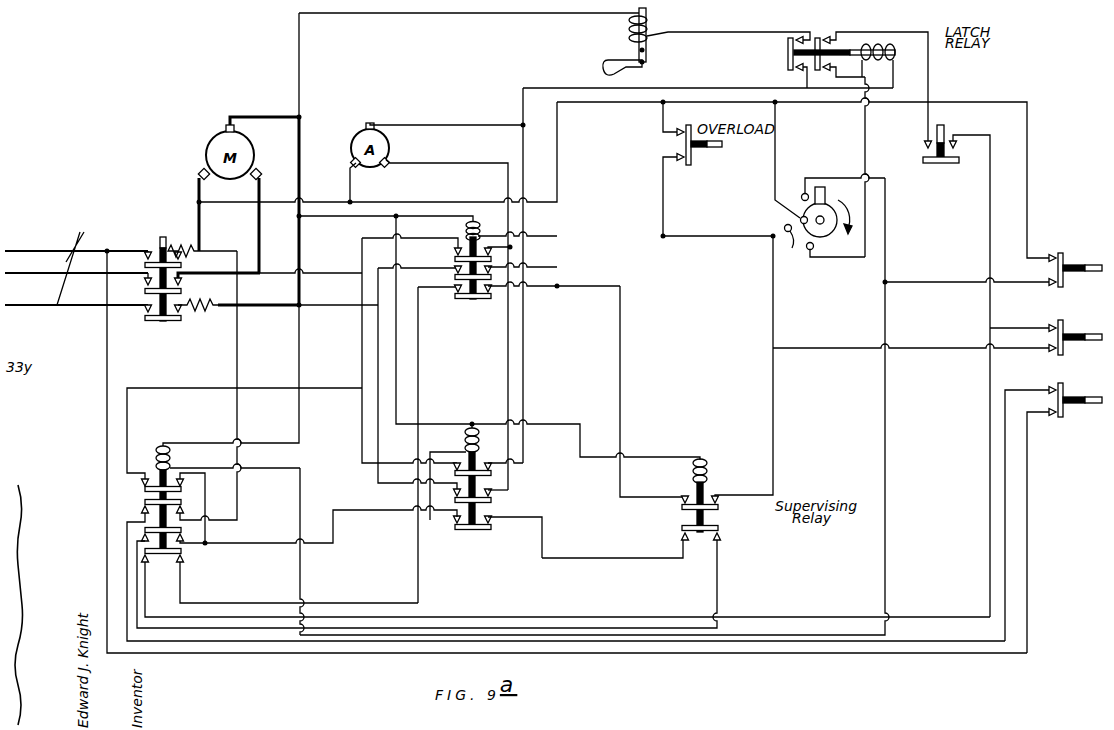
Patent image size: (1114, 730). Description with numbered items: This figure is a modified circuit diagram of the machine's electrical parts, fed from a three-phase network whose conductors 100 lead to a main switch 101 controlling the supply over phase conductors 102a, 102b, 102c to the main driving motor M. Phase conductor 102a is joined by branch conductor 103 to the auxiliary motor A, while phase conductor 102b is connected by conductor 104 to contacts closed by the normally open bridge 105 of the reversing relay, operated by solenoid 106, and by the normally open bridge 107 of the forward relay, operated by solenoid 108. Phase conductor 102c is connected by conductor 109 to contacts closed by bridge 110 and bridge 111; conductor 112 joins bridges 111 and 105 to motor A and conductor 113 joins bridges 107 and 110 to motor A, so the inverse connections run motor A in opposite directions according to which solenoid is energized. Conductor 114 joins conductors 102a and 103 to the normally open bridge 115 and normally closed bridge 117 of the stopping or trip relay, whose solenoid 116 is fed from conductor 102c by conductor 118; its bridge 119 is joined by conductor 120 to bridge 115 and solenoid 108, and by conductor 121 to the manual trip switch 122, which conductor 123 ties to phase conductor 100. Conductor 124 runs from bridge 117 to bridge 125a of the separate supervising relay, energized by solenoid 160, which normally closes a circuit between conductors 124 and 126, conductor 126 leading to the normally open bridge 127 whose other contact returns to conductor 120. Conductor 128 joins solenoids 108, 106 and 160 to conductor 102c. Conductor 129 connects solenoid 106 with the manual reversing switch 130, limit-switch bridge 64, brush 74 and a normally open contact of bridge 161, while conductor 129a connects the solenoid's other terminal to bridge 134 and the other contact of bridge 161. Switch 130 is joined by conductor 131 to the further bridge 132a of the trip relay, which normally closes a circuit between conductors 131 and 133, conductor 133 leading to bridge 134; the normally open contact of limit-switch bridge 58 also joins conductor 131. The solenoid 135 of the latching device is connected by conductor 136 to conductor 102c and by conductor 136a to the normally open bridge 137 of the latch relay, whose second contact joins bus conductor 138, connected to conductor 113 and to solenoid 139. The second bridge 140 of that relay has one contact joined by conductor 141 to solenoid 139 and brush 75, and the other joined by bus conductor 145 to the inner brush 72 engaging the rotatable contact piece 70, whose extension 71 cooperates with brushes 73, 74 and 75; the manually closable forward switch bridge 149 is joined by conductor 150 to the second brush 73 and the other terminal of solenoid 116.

The conductors 100 is at (76, 266).
The main switch 101 is at (162, 237).
The phase conductor 102a is at (197, 190).
The phase conductor 102b is at (258, 195).
The phase conductor 102c is at (298, 150).
The branch conductor 103 is at (352, 186).
The conductor 104 is at (360, 353).
The normally open bridge 105 is at (452, 259).
The solenoid 106 is at (473, 221).
The normally open bridge 107 is at (493, 471).
The solenoid 108 is at (450, 476).
The conductor 109 is at (376, 386).
The bridge 110 is at (452, 277).
The bridge 111 is at (493, 494).
The conductor 112 is at (441, 163).
The conductor 113 is at (441, 125).
The conductor 114 is at (235, 343).
The normally open bridge 115 is at (158, 474).
The solenoid 116 is at (172, 457).
The normally closed bridge 117 is at (143, 489).
The conductor 118 is at (297, 336).
The bridge 119 is at (143, 503).
The conductor 120 is at (405, 495).
The conductor 121 is at (147, 567).
The trip switch 122 is at (1053, 518).
The conductor 123 is at (105, 341).
The conductor 124 is at (670, 546).
The bridge 125a is at (721, 536).
The conductor 126 is at (143, 530).
The normally open bridge 127 is at (492, 536).
The conductor 128 is at (380, 217).
The conductor 129 is at (719, 238).
The conductor 129a is at (625, 392).
The reversing switch 130 is at (1046, 343).
The conductor 131 is at (150, 603).
The bridge 132a is at (183, 557).
The conductor 133 is at (422, 333).
The bridge 134 is at (455, 297).
The solenoid 135 is at (648, 15).
The conductor 136 is at (447, 12).
The conductor 136a is at (775, 25).
The bridge 137 is at (786, 51).
The bus conductor 138 is at (745, 77).
The control solenoid 139 is at (894, 57).
The bridge 140 is at (828, 36).
The conductor 141 is at (842, 162).
The bus conductor 145 is at (932, 79).
The forward switch bridge 149 is at (1075, 279).
The conductor 150 is at (298, 499).
The solenoid 160 is at (708, 462).
The bridge 161 is at (721, 511).
The limit switch bridge 58 is at (956, 371).
The limit switch bridge 64 is at (692, 161).
The rotatable contact piece 70 is at (813, 169).
The extension 71 is at (826, 190).
The inner brush 72 is at (799, 220).
The second brush 73 is at (801, 192).
The third brush 74 is at (787, 243).
The brush 75 is at (814, 247).